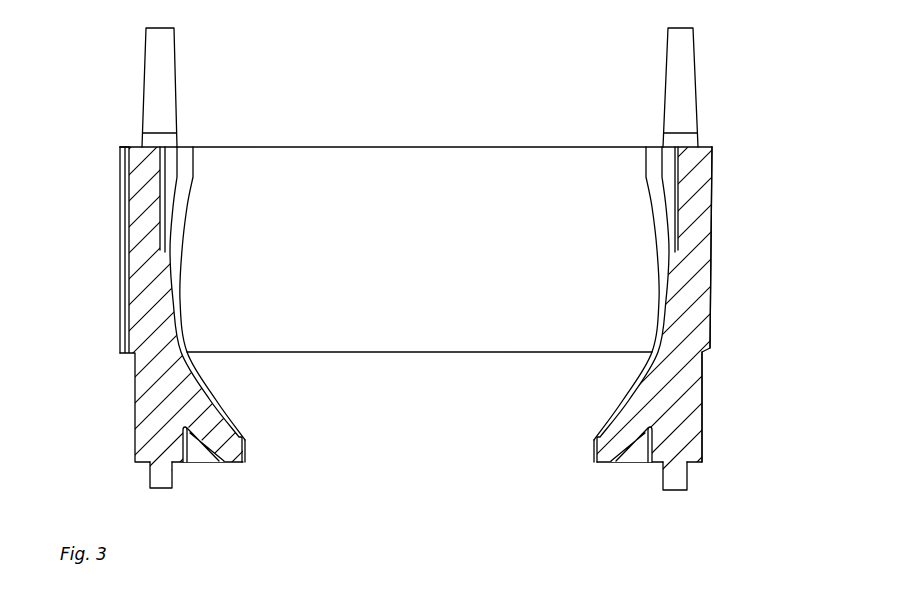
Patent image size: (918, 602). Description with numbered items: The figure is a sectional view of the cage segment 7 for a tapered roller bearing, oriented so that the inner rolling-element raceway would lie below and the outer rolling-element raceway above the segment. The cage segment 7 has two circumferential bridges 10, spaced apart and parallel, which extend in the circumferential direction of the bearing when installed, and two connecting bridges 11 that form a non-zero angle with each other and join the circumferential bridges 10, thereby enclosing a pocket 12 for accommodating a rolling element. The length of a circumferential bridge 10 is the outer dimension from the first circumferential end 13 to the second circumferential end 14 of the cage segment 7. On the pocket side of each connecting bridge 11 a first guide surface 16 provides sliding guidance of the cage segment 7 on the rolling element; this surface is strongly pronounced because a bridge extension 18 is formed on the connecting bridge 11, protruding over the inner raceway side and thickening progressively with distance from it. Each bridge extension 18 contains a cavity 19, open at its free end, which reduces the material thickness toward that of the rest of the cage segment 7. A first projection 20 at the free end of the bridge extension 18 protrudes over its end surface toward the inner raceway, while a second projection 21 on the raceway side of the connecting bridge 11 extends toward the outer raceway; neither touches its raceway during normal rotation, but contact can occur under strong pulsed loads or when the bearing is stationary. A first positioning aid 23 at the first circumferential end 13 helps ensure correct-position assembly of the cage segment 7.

The cage segment 7 is at (740, 415).
The circumferential bridge 10 is at (400, 128).
The connecting bridge 11 is at (117, 232).
The pocket 12 is at (425, 331).
The first circumferential end 13 is at (127, 298).
The second circumferential end 14 is at (713, 288).
The first guide surface 16 is at (222, 412).
The bridge extension 18 is at (232, 460).
The cavity 19 is at (195, 453).
The first projection 20 is at (148, 477).
The second projection 21 is at (147, 90).
The first positioning aid 23 is at (122, 168).